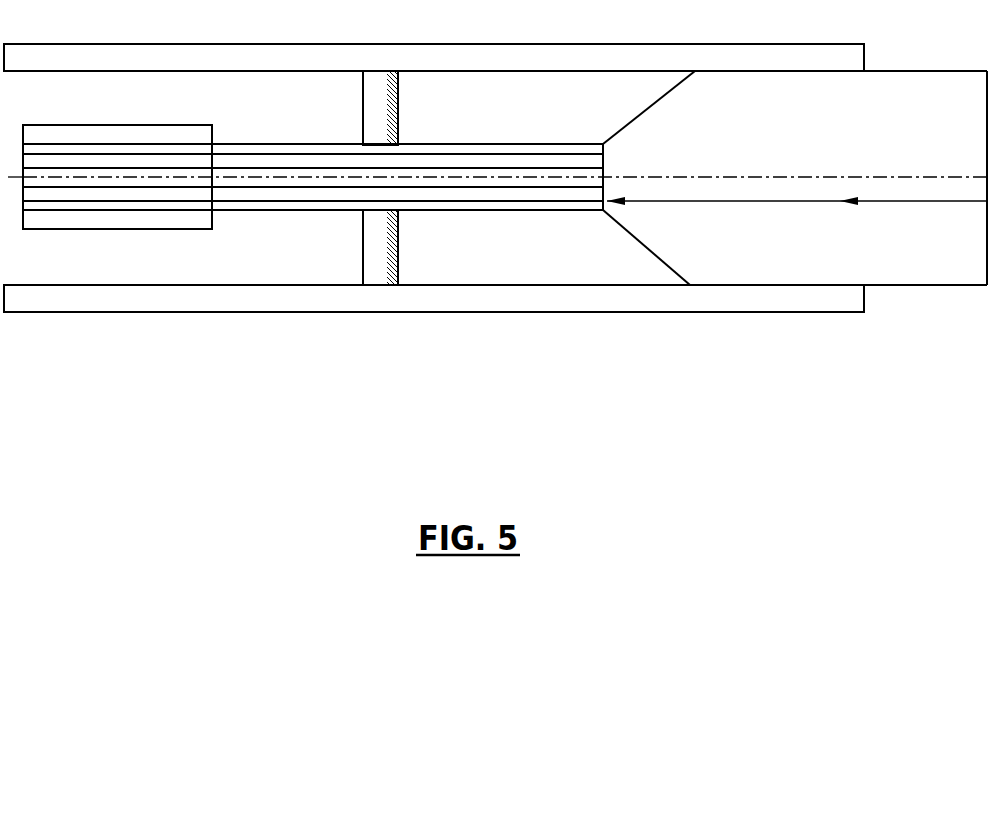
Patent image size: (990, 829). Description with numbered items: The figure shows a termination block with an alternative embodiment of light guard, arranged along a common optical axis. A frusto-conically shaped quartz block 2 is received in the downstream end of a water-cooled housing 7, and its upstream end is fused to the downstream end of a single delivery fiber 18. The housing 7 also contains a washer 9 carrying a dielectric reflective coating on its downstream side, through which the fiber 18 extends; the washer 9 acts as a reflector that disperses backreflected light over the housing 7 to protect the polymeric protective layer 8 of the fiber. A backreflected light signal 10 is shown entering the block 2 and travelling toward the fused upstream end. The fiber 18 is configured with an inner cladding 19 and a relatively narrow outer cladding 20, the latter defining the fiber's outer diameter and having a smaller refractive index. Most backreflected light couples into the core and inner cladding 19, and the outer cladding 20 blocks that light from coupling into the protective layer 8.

The quartz block 2 is at (760, 268).
The water-cooled housing 7 is at (813, 295).
The polymeric coating or outer cladding (protective layer) 8 is at (104, 216).
The washer 9 is at (372, 231).
The backreflected light signal 10 is at (947, 203).
The single delivery fiber 18 is at (104, 173).
The inner cladding 19 is at (175, 155).
The outer cladding 20 is at (286, 148).